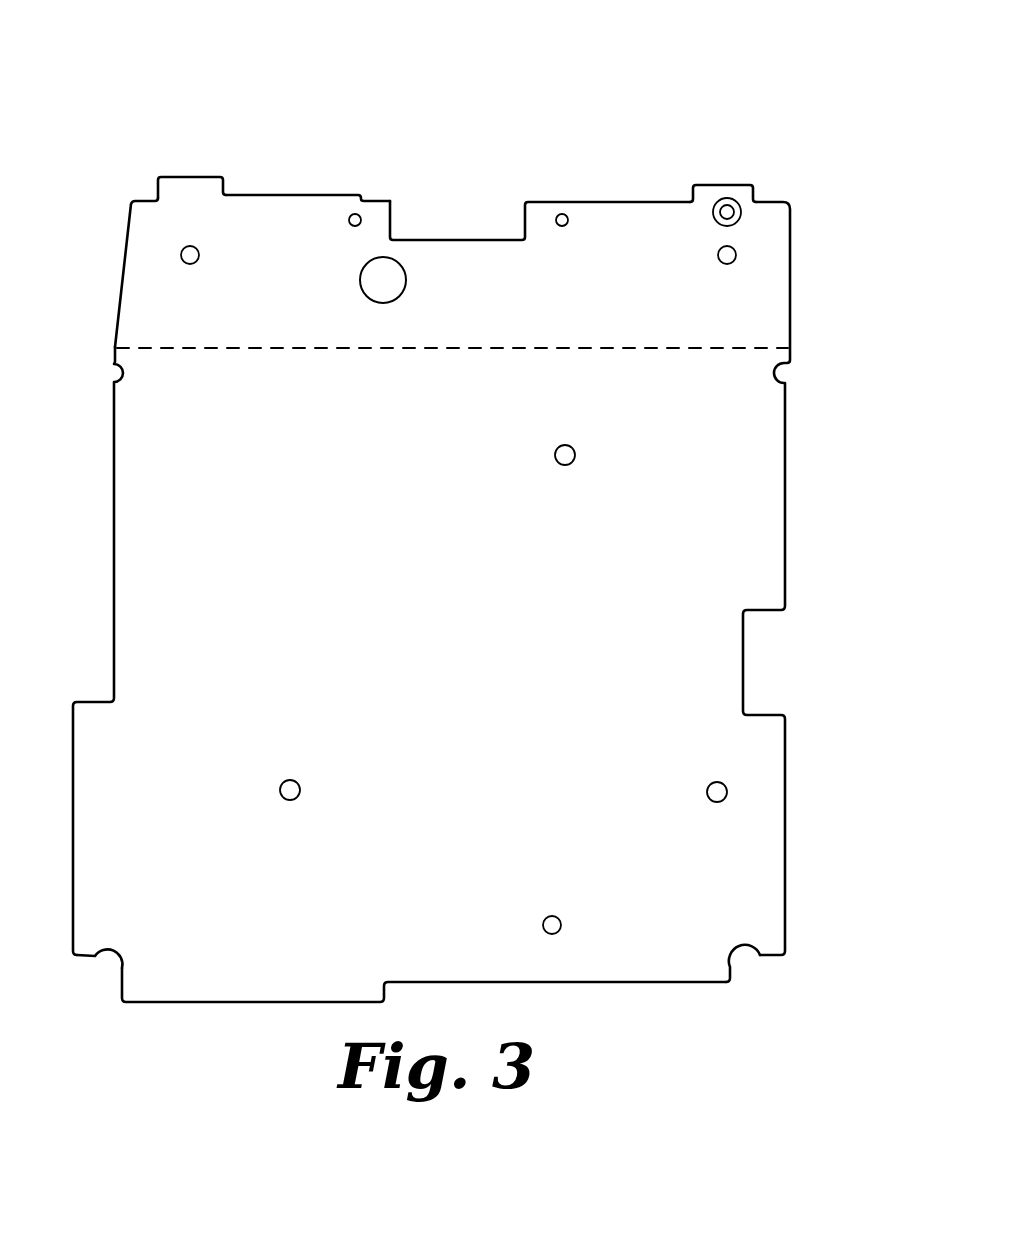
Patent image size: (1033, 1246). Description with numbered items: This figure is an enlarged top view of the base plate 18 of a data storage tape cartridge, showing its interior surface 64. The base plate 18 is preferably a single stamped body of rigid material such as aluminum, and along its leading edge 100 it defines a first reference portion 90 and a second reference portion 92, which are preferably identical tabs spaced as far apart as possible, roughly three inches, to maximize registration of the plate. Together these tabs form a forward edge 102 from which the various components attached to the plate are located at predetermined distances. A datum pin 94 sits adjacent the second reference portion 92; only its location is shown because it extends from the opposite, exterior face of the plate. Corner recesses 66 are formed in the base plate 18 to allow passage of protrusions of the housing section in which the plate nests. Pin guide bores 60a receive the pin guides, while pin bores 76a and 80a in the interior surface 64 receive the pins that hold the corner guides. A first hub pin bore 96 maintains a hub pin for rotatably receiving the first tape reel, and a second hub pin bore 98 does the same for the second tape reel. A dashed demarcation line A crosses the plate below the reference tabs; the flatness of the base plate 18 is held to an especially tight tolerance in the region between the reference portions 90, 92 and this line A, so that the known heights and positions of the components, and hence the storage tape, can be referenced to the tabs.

The base plate 18 is at (752, 83).
The interior surface 64 is at (752, 491).
The first reference portion 90 is at (183, 190).
The second reference portion 92 is at (750, 190).
The datum pin 94 is at (738, 222).
The first hub pin bore 96 is at (558, 465).
The second hub pin bore 98 is at (294, 779).
The leading edge 100 is at (301, 195).
The forward edge 102 is at (210, 178).
The pin guide bores 60a is at (349, 225).
The recesses 66 is at (402, 293).
The pin bores 76a is at (707, 786).
The pin bores 80a is at (197, 262).
The demarcation line A is at (760, 350).